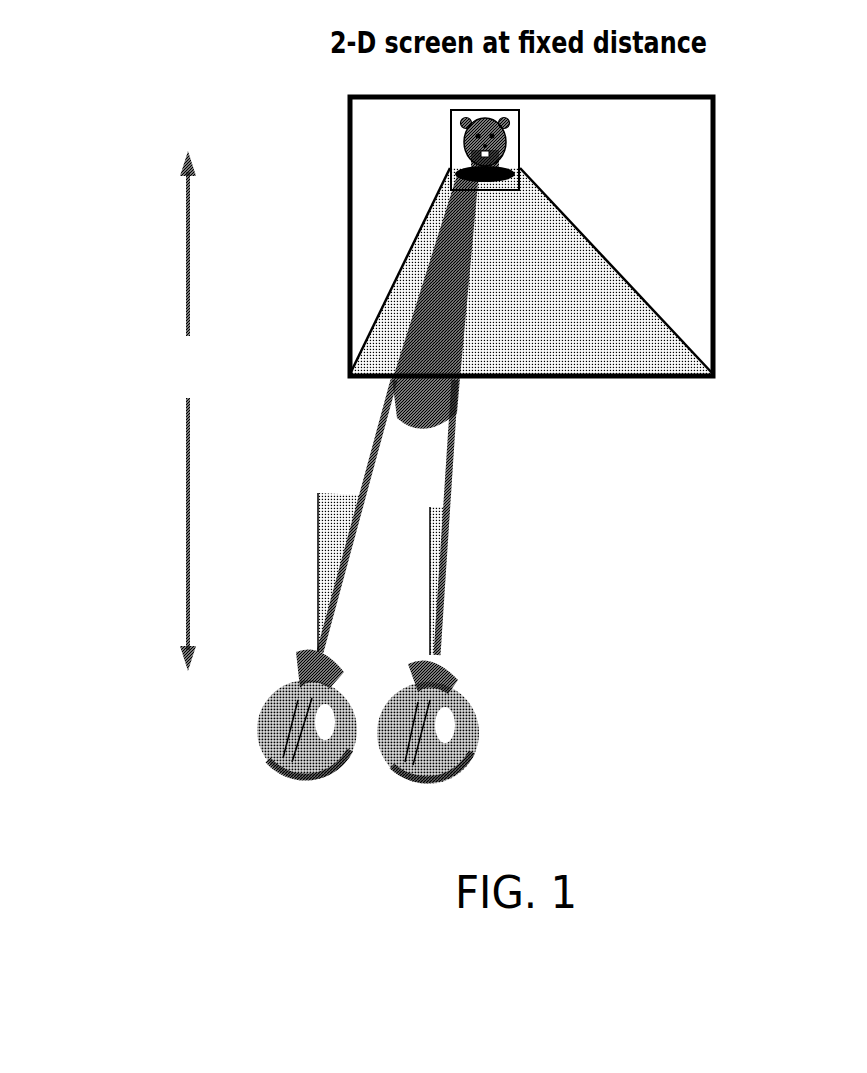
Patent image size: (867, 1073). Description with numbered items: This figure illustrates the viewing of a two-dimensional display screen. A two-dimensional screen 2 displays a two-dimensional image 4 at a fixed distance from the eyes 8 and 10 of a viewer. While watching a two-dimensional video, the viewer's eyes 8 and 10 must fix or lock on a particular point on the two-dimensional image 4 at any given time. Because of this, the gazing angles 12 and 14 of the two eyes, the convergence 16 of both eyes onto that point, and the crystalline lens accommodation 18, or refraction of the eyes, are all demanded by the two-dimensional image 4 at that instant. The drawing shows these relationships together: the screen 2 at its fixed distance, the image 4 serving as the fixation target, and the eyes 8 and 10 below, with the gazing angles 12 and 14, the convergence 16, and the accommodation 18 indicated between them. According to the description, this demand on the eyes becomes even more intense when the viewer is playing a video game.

The two-dimensional screen 2 is at (714, 105).
The two-dimensional image 4 is at (400, 154).
The eye 8 is at (283, 763).
The eye 10 is at (455, 754).
The gazing angle 12 is at (326, 538).
The gazing angle 14 is at (445, 560).
The convergence 16 is at (450, 405).
The crystalline lens accommodation 18 is at (170, 283).